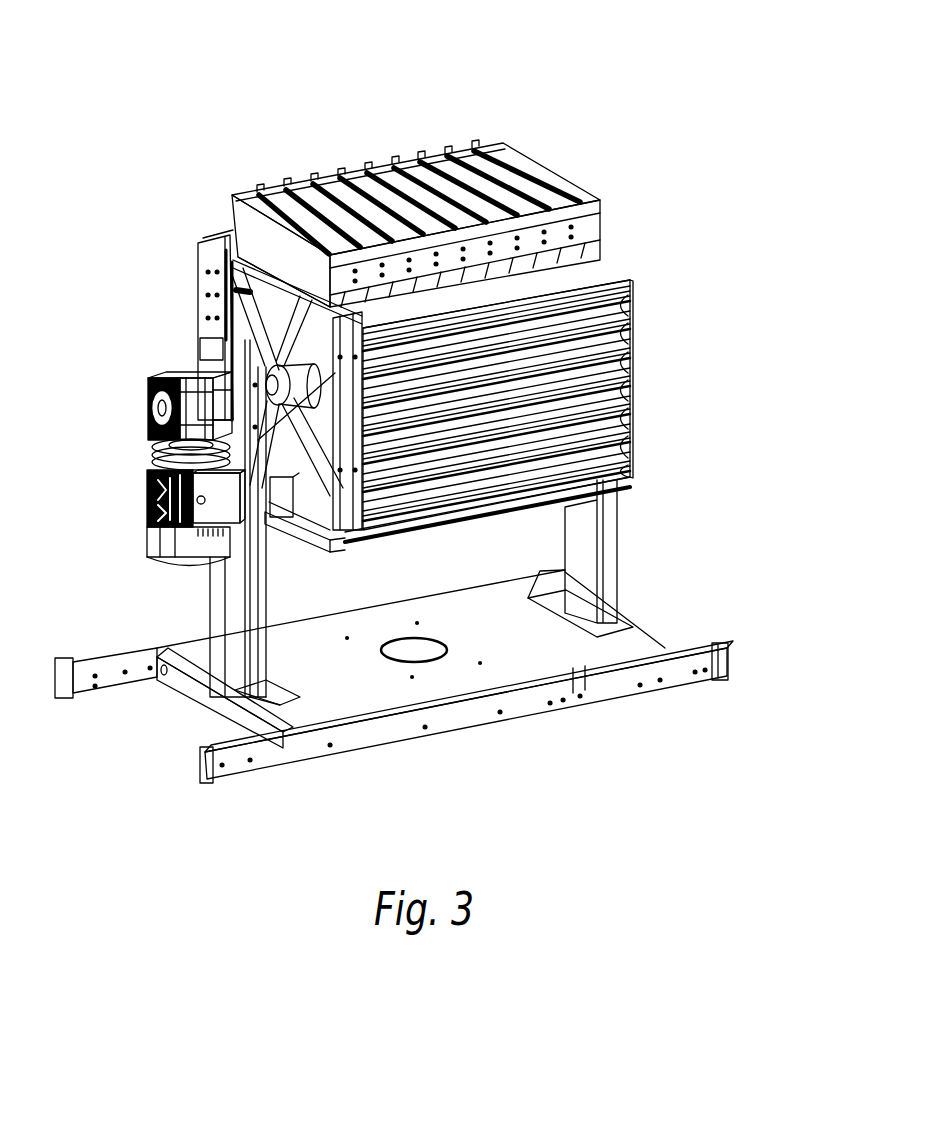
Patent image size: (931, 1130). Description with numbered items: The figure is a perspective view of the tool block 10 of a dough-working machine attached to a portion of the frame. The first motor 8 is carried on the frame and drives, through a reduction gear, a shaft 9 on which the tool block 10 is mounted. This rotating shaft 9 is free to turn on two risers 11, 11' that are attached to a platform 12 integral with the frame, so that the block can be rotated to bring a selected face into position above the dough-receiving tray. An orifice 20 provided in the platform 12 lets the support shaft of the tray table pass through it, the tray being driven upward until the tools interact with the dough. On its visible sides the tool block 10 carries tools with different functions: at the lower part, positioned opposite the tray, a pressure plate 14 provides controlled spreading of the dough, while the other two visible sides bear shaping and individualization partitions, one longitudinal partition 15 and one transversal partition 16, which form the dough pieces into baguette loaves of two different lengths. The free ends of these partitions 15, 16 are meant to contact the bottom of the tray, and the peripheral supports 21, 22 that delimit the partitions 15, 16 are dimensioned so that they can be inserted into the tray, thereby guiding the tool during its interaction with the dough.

The first motor 8 is at (135, 526).
The shaft 9 is at (225, 338).
The tool block 10 is at (542, 336).
The riser 11 is at (648, 558).
The riser 11' is at (186, 682).
The platform 12 is at (394, 707).
The pressure plate 14 is at (617, 494).
The longitudinal partition 15 is at (629, 362).
The transversal partition 16 is at (294, 179).
The orifice 20 is at (425, 639).
The peripheral support 21 is at (635, 263).
The peripheral support 22 is at (416, 166).